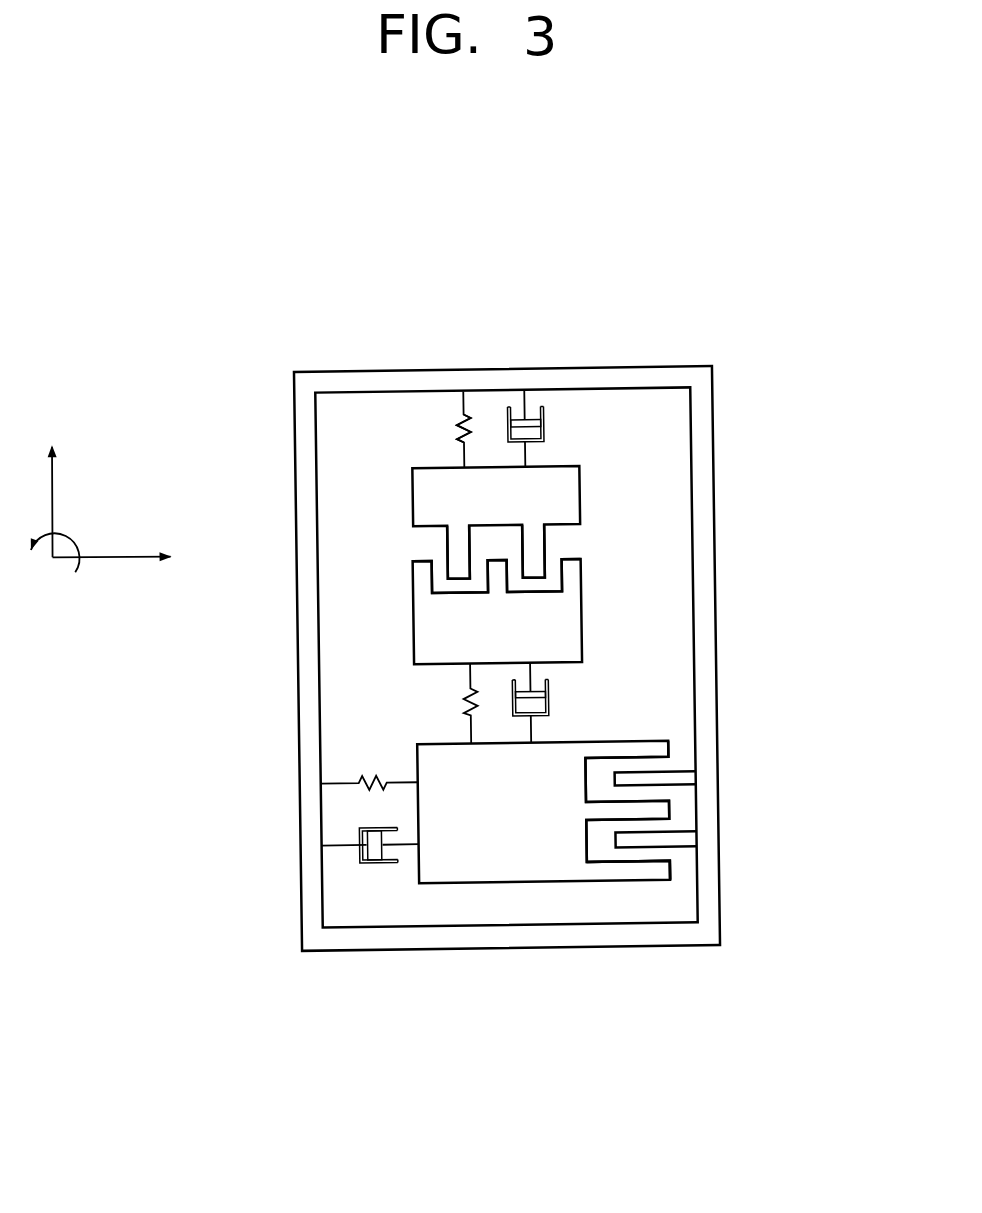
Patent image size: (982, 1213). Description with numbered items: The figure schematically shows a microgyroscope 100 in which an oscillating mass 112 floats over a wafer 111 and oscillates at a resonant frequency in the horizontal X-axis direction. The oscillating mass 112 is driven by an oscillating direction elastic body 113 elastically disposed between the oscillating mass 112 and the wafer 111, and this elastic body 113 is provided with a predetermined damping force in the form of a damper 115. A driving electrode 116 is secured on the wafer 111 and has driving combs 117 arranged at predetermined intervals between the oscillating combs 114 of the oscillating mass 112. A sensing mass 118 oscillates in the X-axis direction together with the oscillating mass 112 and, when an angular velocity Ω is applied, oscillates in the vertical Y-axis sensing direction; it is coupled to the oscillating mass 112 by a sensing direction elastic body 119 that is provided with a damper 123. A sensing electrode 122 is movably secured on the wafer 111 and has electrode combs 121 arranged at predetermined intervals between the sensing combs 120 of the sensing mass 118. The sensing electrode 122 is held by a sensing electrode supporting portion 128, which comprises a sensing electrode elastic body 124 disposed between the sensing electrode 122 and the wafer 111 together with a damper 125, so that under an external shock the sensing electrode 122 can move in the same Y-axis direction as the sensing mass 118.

The microgyroscope 100 is at (128, 248).
The wafer 111 is at (309, 934).
The oscillating mass 112 is at (497, 893).
The oscillating direction elastic body 113 is at (358, 778).
The oscillating combs 114 is at (644, 870).
The damper 115 is at (358, 833).
The driving electrode 116 is at (672, 857).
The driving combs 117 is at (664, 842).
The sensing mass 118 is at (591, 623).
The sensing direction elastic body 119 is at (464, 699).
The sensing combs 120 is at (573, 571).
The electrode combs 121 is at (456, 551).
The sensing electrode 122 is at (594, 494).
The damper 123 is at (548, 694).
The sensing electrode elastic body 124 is at (460, 424).
The damper 125 is at (546, 426).
The sensing electrode supporting portion 128 is at (452, 407).